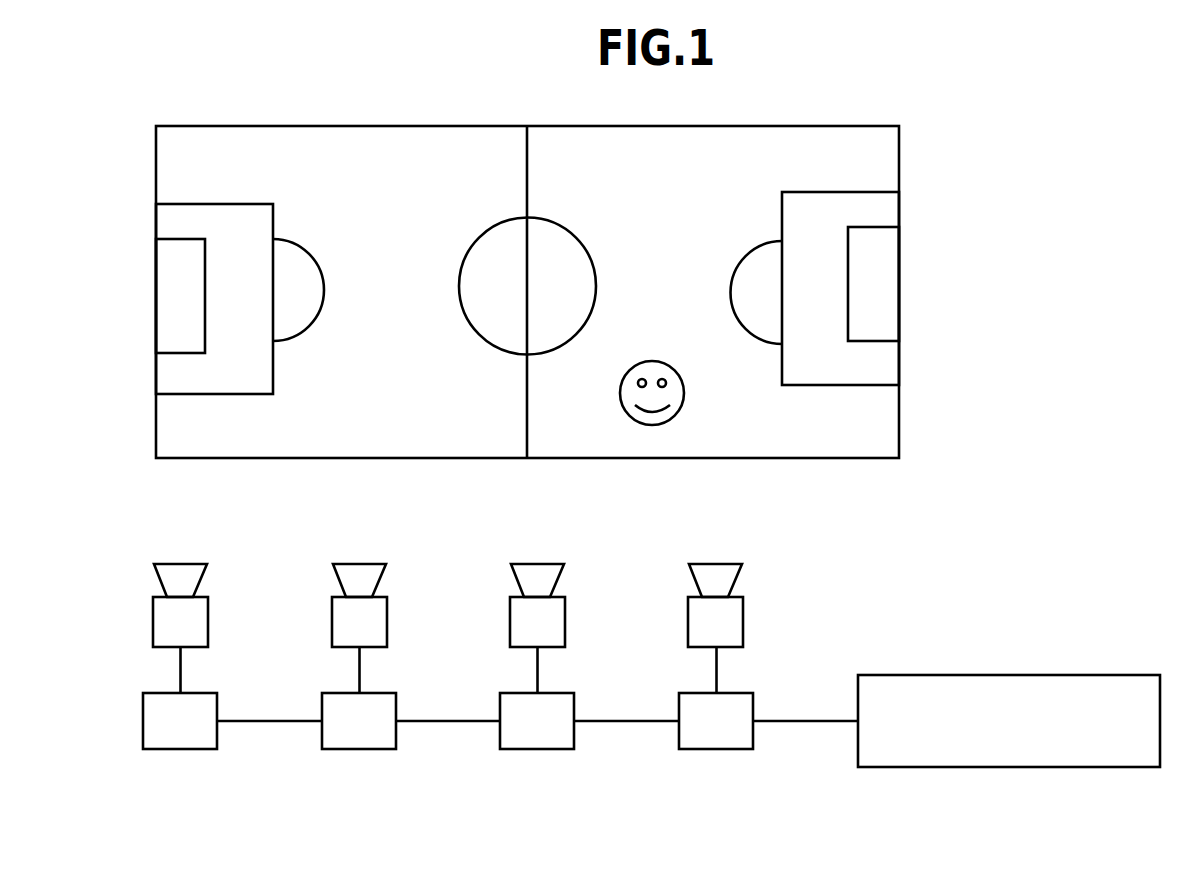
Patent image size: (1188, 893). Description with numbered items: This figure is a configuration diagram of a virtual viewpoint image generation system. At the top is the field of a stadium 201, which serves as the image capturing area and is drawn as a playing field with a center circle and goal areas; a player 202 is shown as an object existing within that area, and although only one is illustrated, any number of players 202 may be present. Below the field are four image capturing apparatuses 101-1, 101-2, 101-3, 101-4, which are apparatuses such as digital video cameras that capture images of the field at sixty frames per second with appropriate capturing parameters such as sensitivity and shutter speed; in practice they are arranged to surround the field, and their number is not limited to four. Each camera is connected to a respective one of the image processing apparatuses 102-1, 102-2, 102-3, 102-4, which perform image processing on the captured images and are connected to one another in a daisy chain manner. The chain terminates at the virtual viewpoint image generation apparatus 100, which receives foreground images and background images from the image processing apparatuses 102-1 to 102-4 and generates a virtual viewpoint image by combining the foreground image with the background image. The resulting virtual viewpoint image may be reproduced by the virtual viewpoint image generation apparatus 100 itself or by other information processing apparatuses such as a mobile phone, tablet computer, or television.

The virtual viewpoint image generation apparatus 100 is at (1011, 675).
The image capturing apparatus 101-1 is at (208, 622).
The image capturing apparatus 101-2 is at (387, 622).
The image capturing apparatus 101-3 is at (565, 622).
The image capturing apparatus 101-4 is at (743, 622).
The image processing apparatus 102-1 is at (195, 693).
The image processing apparatus 102-2 is at (374, 693).
The image processing apparatus 102-3 is at (552, 693).
The image processing apparatus 102-4 is at (731, 693).
The field of a stadium 201 is at (853, 126).
The player 202 is at (653, 361).